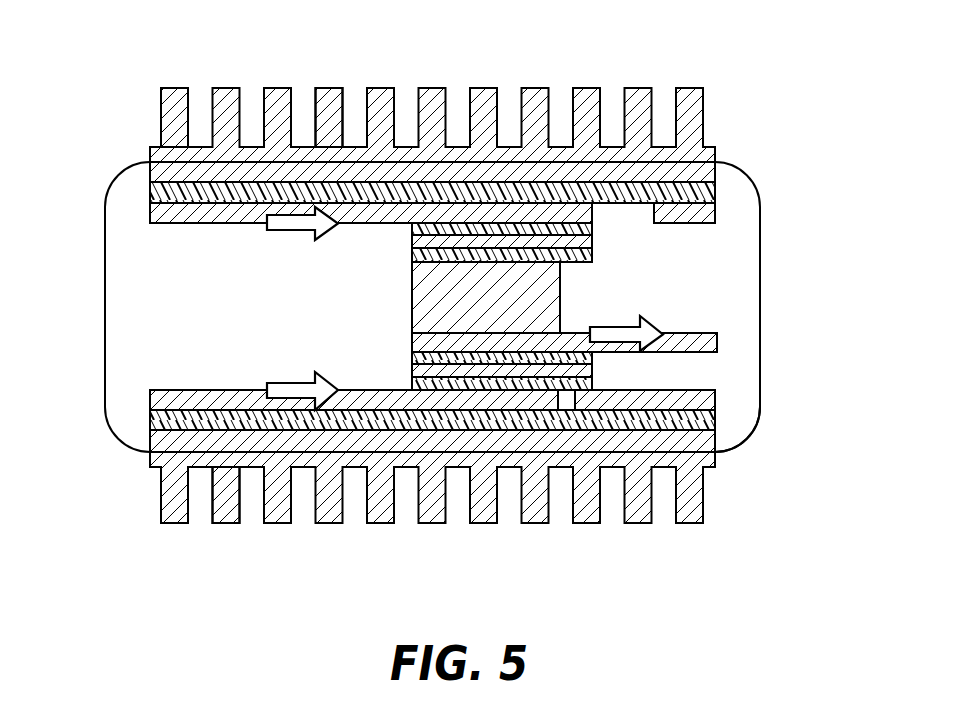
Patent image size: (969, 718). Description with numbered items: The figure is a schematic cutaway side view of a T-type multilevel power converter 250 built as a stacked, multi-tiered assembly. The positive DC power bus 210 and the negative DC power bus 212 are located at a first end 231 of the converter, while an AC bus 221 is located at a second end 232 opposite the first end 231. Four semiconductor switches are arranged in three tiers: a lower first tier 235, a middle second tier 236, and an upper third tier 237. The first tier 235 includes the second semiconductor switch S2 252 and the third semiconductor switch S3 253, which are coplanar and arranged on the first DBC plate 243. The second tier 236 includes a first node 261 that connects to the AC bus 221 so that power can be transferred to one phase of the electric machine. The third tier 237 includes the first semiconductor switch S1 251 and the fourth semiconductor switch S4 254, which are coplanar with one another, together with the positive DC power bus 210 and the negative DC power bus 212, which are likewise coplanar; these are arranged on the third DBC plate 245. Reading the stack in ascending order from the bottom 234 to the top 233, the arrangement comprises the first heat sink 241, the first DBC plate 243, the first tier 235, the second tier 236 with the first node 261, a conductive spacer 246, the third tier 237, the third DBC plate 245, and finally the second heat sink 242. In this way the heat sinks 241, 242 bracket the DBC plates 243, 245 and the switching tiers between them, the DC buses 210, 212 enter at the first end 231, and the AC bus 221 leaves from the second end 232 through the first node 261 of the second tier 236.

The positive DC power bus 210 is at (150, 213).
The negative DC power bus 212 is at (150, 403).
The AC bus 221 is at (717, 342).
The first end 231 is at (97, 314).
The second end 232 is at (807, 281).
The top 233 is at (200, 78).
The bottom 234 is at (224, 528).
The first tier 235 is at (772, 417).
The second tier 236 is at (773, 310).
The third tier 237 is at (765, 173).
The first heat sink 241 is at (378, 523).
The second heat sink 242 is at (329, 88).
The first DBC plate 243 is at (715, 420).
The third DBC plate 245 is at (150, 197).
The conductive spacer 246 is at (507, 310).
The T-type multilevel power converter 250 is at (433, 80).
The first semiconductor switch S1 251 is at (592, 233).
The second semiconductor switch S2 252 is at (412, 357).
The third semiconductor switch S3 253 is at (592, 382).
The fourth semiconductor switch S4 254 is at (412, 256).
The first node 261 is at (560, 330).